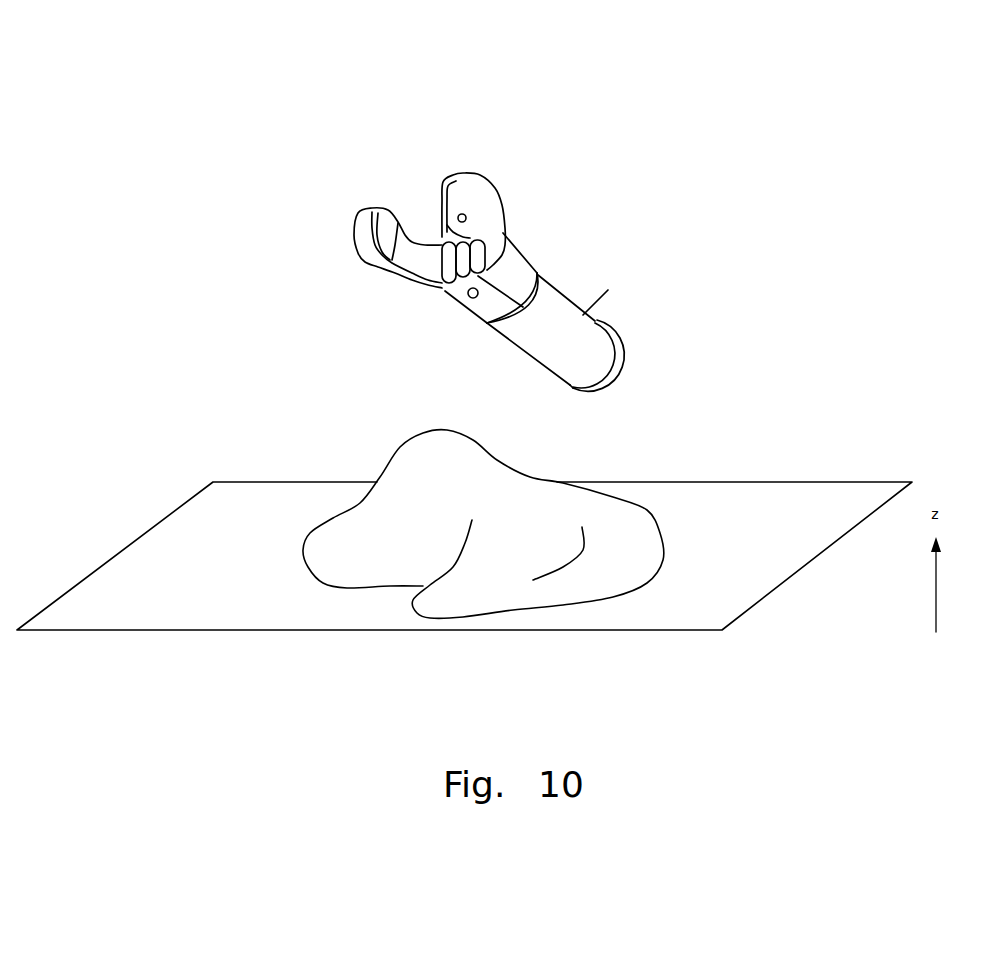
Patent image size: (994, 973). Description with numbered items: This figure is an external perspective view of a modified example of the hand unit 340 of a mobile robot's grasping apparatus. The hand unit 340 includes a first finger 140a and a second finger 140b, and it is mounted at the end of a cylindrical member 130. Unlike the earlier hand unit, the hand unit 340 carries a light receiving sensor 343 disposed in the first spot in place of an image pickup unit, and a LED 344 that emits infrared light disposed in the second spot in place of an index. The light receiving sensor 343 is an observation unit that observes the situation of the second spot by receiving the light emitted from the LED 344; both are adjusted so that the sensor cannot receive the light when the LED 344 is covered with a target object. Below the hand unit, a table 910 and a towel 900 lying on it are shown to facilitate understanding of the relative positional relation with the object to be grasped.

The main body (cylindrical housing) 130 is at (650, 338).
The hand unit 340 is at (527, 263).
The light receiving sensor 343 is at (468, 297).
The LED 344 is at (468, 218).
The first finger 140a is at (358, 227).
The second finger 140b is at (460, 187).
The towel 900 is at (346, 562).
The table 910 is at (827, 496).